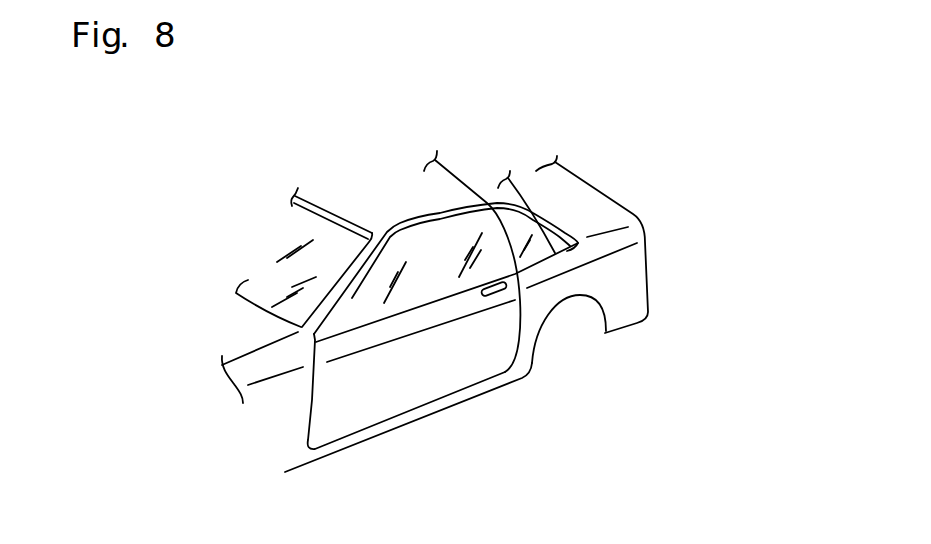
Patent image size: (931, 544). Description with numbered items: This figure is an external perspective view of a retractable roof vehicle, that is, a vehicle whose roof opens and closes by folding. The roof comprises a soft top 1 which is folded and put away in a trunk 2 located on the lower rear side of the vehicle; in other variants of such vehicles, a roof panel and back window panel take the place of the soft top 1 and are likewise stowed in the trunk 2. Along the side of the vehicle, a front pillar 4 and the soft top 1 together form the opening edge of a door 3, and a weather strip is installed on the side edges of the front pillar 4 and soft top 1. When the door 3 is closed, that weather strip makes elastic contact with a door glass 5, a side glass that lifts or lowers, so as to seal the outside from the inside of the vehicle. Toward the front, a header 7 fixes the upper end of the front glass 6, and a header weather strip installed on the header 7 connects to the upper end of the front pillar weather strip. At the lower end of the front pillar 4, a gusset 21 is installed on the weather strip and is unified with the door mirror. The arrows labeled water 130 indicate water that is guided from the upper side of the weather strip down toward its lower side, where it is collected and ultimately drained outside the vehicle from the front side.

The soft top 1 is at (352, 192).
The trunk 2 is at (574, 192).
The door 3 is at (373, 405).
The front pillar 4 is at (347, 293).
The door glass 5 is at (427, 282).
The front glass 6 is at (253, 290).
The header 7 is at (307, 201).
The gusset 21 is at (334, 328).
The water 130 is at (413, 214).